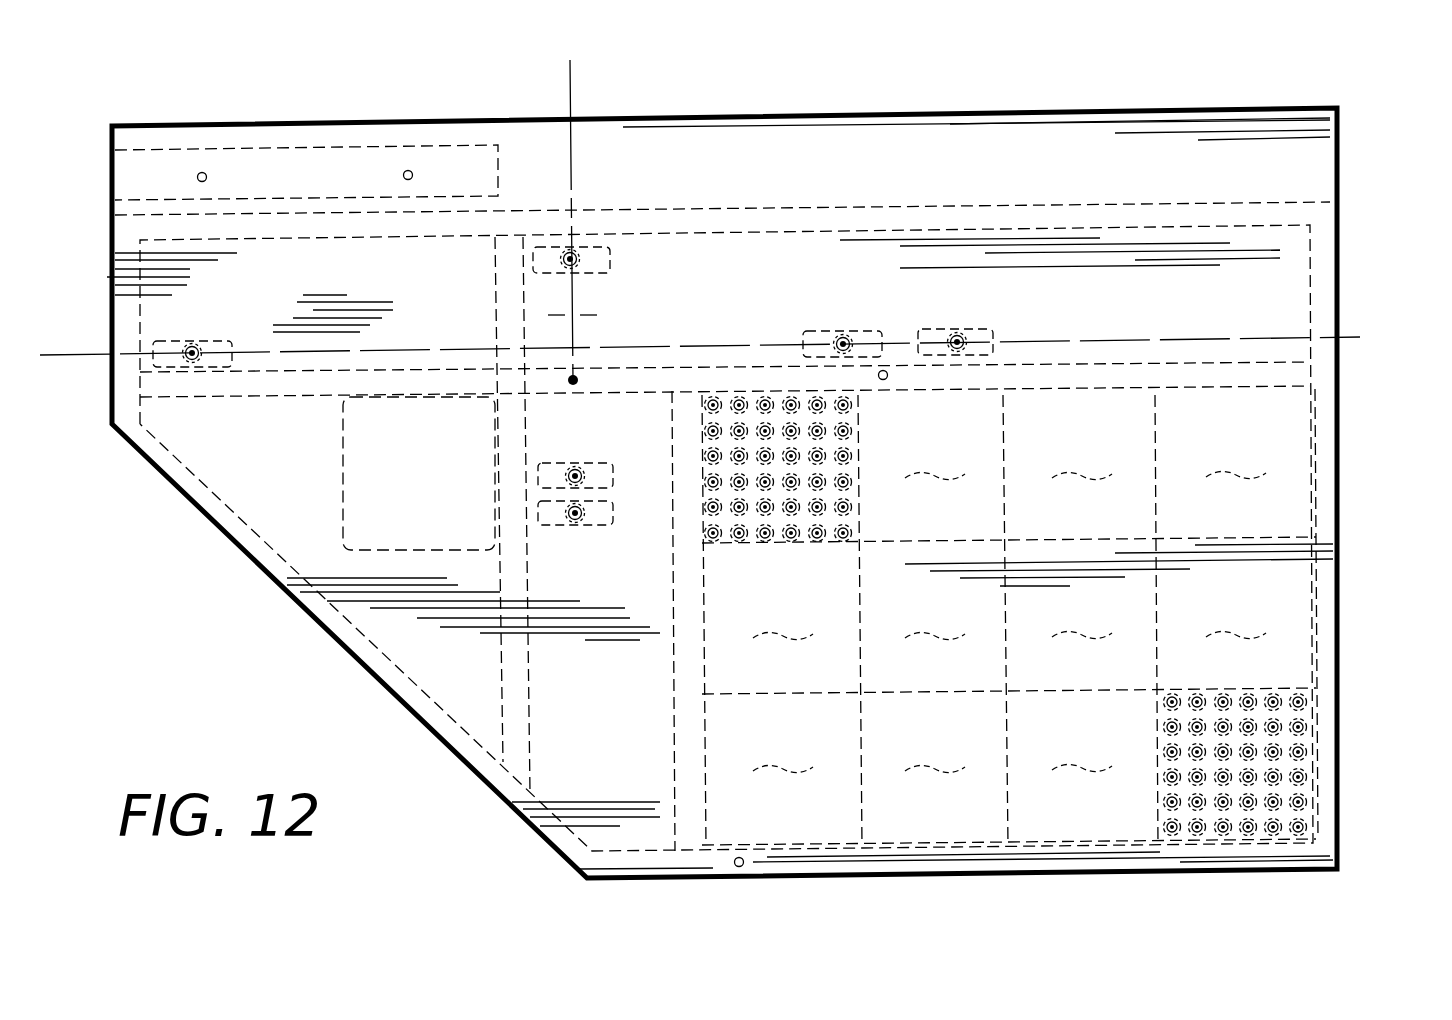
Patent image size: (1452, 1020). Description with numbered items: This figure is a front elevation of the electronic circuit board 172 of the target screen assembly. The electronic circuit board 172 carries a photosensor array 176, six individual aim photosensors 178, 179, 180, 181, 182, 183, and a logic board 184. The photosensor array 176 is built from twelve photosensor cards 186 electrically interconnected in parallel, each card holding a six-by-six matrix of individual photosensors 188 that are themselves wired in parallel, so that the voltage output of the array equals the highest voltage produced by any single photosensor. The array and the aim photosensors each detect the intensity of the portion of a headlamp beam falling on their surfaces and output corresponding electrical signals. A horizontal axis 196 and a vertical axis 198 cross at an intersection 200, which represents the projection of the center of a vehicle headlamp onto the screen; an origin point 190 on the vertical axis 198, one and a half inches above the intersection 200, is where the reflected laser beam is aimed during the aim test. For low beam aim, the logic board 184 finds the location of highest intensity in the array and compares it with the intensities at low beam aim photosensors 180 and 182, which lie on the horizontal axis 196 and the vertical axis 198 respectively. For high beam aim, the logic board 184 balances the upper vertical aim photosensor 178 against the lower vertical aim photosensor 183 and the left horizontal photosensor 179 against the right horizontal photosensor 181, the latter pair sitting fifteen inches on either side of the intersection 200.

The electronic circuit board 172 is at (1045, 165).
The photosensor array 176 is at (1250, 514).
The upper vertical aim photosensor 178 is at (590, 247).
The left horizontal high beam aim photosensor 179 is at (217, 342).
The low beam aim photosensor 180 is at (823, 331).
The right horizontal high beam aim photosensor 181 is at (955, 329).
The low beam aim photosensor 182 is at (604, 463).
The lower vertical aim photosensor 183 is at (573, 526).
The logic board 184 is at (343, 490).
The photosensor card 186 is at (779, 390).
The individual photosensor 188 is at (745, 390).
The origin point 190 is at (575, 312).
The horizontal axis 196 is at (1103, 335).
The vertical axis 198 is at (562, 78).
The intersection 200 is at (572, 351).